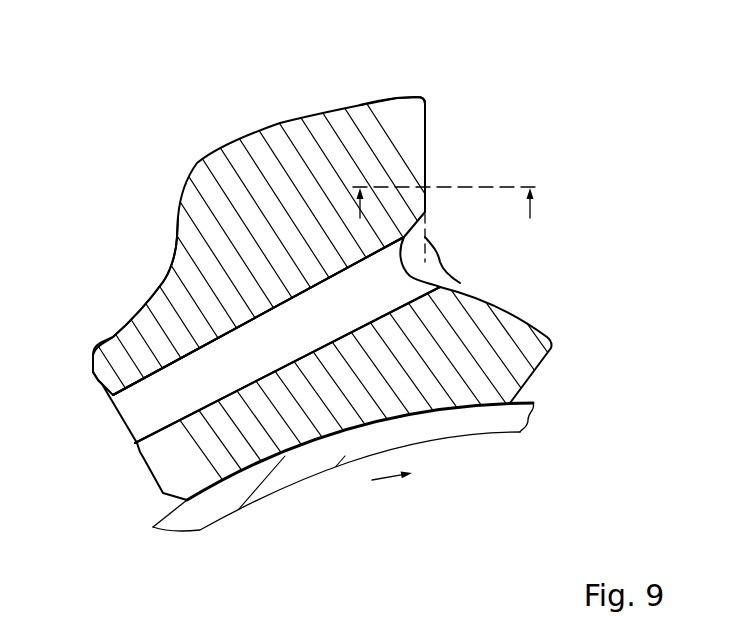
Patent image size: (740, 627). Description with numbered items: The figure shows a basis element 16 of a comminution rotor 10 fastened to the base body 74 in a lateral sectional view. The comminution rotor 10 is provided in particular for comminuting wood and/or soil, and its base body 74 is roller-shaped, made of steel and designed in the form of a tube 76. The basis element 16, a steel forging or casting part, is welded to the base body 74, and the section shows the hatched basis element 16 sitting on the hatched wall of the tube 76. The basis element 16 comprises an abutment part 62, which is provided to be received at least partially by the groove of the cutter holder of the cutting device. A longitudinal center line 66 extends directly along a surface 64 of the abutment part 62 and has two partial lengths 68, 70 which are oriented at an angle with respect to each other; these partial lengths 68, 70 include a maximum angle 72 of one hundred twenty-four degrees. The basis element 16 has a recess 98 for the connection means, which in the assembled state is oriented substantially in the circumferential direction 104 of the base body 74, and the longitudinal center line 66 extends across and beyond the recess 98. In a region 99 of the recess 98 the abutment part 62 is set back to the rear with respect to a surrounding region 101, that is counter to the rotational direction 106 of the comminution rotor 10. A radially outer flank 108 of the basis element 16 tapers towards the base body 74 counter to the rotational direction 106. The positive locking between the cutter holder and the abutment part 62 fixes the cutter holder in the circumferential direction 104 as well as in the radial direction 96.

The comminution rotor 10 is at (560, 214).
The basis element 16 is at (337, 128).
The abutment part 62 is at (399, 131).
The surface 64 is at (436, 117).
The longitudinal center line 66 is at (458, 276).
The partial length 68 is at (426, 162).
The partial length 70 is at (527, 321).
The maximum angle 72 is at (418, 253).
The base body 74 is at (415, 457).
The tube 76 is at (522, 401).
The radial direction 96 is at (366, 454).
The recess 98 is at (207, 354).
The region 99 is at (448, 253).
The surrounding region 101 is at (434, 137).
The circumferential direction 104 is at (440, 515).
The rotational direction 106 is at (385, 479).
The radially outer flank 108 is at (171, 179).